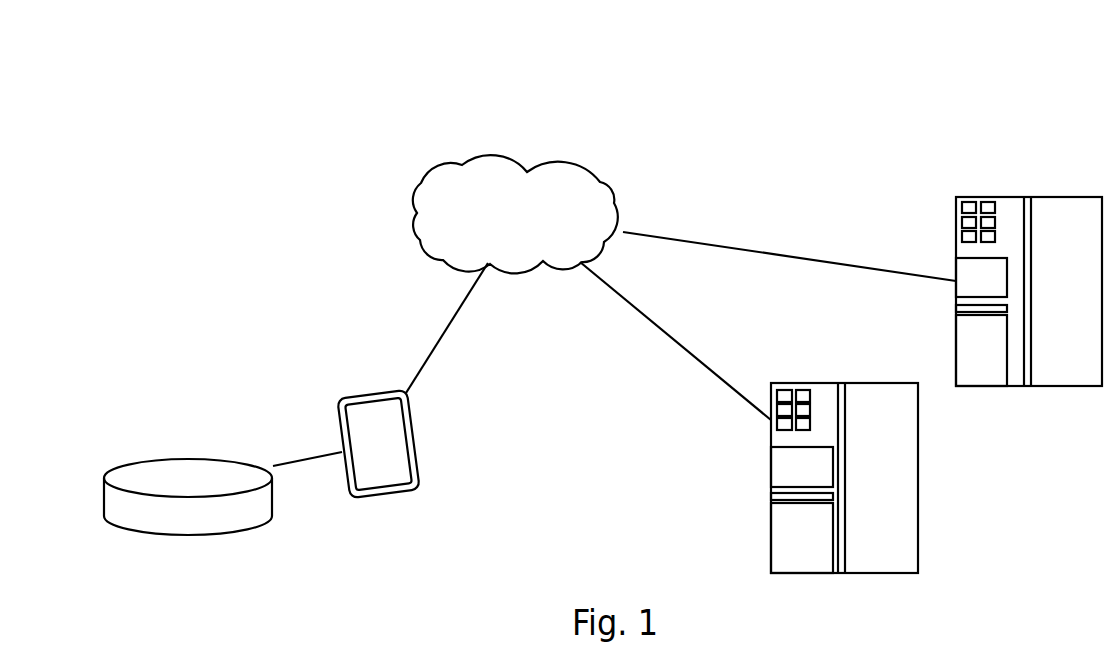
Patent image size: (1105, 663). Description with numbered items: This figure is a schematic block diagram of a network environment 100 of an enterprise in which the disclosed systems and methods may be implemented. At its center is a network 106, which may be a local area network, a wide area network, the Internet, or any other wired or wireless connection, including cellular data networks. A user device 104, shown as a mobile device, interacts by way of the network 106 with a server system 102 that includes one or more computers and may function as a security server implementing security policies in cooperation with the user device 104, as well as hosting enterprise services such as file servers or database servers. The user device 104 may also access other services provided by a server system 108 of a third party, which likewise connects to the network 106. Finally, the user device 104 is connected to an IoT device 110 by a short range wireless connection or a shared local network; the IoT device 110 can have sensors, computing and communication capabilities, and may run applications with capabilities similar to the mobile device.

The network environment 100 is at (933, 92).
The server system 102 is at (906, 470).
The user device 104 is at (380, 492).
The network 106 is at (588, 228).
The server system of a third party 108 is at (1091, 282).
The IoT device 110 is at (205, 523).